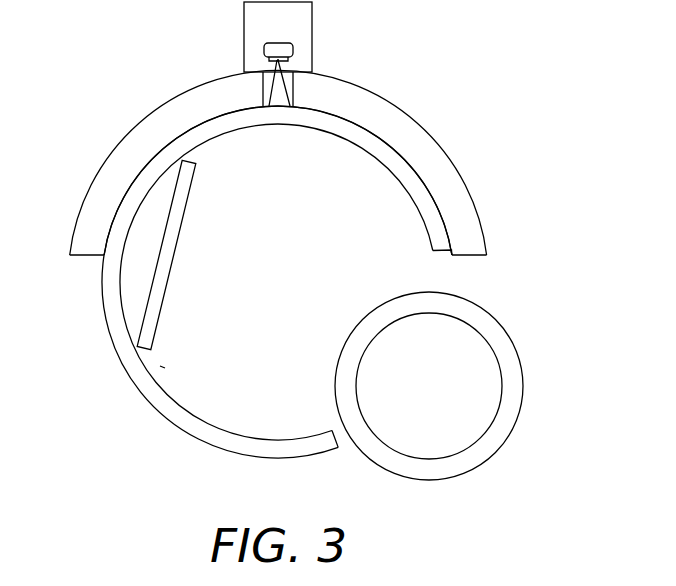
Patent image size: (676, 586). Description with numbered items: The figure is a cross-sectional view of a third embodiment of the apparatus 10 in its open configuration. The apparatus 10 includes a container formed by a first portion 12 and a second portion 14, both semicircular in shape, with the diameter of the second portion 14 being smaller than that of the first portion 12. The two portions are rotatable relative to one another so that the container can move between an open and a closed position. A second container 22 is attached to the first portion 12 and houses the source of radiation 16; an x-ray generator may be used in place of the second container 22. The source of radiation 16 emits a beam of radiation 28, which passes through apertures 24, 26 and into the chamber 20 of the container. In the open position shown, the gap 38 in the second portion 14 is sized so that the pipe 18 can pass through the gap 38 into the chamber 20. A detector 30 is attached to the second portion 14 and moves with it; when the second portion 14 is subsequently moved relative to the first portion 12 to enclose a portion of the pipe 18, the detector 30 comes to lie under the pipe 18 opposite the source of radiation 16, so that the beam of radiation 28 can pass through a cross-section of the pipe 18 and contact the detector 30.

The apparatus 10 is at (521, 467).
The first portion 12 is at (362, 92).
The second portion 14 is at (190, 432).
The source of radiation 16 is at (263, 48).
The pipe 18 is at (520, 388).
The chamber 20 is at (165, 368).
The second container 22 is at (244, 21).
The aperture 24 is at (292, 62).
The aperture 26 is at (289, 108).
The beam of radiation 28 is at (263, 88).
The detector 30 is at (173, 262).
The gap 38 is at (433, 274).